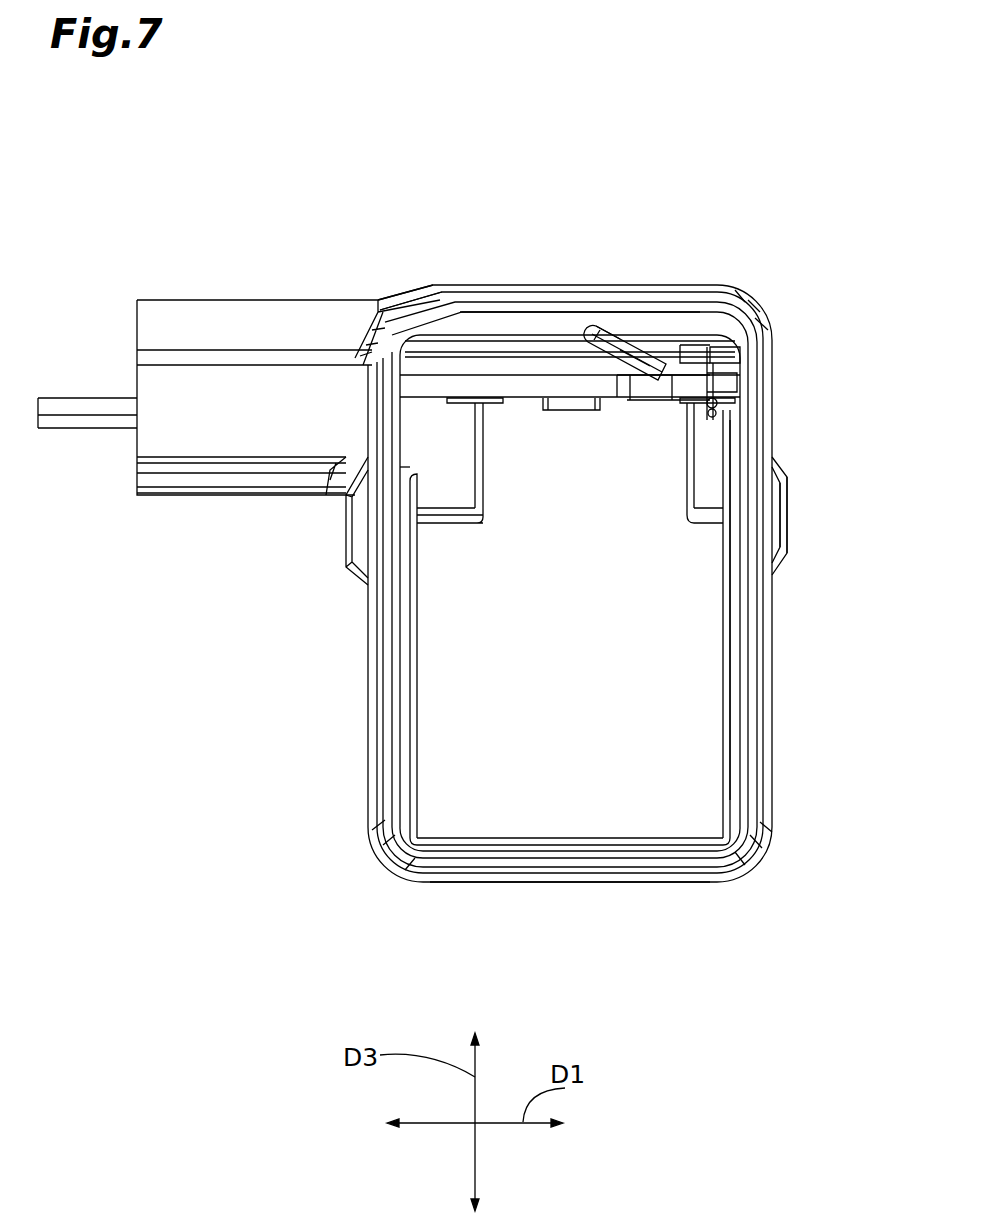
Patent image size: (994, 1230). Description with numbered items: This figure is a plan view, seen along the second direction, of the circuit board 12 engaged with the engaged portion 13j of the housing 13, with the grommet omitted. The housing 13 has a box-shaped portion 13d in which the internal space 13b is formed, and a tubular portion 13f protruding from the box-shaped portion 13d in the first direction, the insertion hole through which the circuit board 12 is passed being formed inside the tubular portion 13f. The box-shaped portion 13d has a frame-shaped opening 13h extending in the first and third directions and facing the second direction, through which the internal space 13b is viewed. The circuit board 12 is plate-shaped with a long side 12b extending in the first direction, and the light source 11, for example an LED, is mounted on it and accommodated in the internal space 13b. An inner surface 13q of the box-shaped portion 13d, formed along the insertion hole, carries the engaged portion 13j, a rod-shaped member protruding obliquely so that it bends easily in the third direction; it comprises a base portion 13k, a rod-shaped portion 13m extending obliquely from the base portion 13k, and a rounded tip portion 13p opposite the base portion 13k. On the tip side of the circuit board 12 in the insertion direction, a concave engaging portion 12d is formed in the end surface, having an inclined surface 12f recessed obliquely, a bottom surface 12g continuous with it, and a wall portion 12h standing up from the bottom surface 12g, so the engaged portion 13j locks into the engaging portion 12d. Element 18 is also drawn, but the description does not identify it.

The light source 11 is at (578, 405).
The circuit board 12 is at (525, 389).
The long side 12b is at (486, 385).
The engaging portion 12d is at (858, 483).
The inclined surface 12f is at (630, 403).
The bottom surface 12g is at (667, 403).
The wall portion 12h is at (650, 390).
The housing 13 is at (782, 735).
The internal space 13b is at (614, 633).
The box-shaped portion 13d is at (578, 884).
The tubular portion 13f is at (258, 398).
The opening 13h is at (437, 285).
The engaged portion 13j is at (807, 150).
The base portion 13k is at (600, 335).
The rod-shaped portion 13m is at (633, 360).
The tip portion 13p is at (678, 352).
The inner surface 13q is at (543, 335).
The wire 18 is at (80, 412).